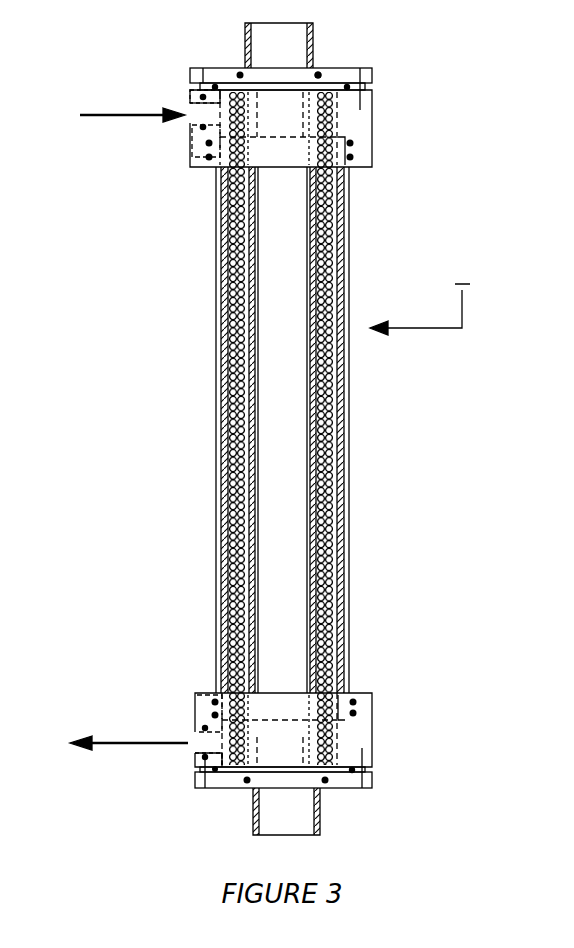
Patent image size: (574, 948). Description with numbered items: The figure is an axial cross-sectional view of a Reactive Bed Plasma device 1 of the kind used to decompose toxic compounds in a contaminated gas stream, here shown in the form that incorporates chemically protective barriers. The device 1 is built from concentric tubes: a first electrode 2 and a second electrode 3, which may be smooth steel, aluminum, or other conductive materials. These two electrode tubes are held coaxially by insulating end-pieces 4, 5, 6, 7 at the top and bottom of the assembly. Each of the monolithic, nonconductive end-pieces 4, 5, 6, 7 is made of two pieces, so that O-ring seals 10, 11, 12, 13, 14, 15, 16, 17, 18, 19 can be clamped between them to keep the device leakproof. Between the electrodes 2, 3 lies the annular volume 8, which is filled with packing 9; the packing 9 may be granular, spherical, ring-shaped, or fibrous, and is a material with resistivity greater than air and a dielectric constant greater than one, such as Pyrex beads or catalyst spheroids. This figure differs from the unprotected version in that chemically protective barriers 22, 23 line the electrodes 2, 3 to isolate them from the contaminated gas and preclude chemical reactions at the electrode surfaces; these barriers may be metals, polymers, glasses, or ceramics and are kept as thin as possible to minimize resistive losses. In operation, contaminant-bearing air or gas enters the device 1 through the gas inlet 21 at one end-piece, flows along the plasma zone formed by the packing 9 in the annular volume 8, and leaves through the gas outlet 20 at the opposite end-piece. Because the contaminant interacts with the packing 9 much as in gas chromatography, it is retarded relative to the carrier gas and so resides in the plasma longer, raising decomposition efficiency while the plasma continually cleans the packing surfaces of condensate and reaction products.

The plasma device 1 is at (420, 298).
The first electrode 2 is at (253, 366).
The second electrode 3 is at (216, 243).
The insulating end-piece 4 is at (195, 697).
The insulating end-piece 5 is at (190, 165).
The insulating end-piece 6 is at (232, 790).
The insulating end-piece 7 is at (222, 69).
The annular volume 8 is at (232, 434).
The packing 9 is at (235, 302).
The O-ring seal 10 is at (322, 790).
The O-ring seal 11 is at (320, 76).
The O-ring seal 12 is at (352, 772).
The O-ring seal 13 is at (350, 86).
The O-ring seal 14 is at (356, 713).
The O-ring seal 15 is at (354, 143).
The O-ring seal 16 is at (356, 702).
The O-ring seal 17 is at (354, 157).
The O-ring seal 18 is at (195, 757).
The O-ring seal 19 is at (190, 96).
The gas outlet 20 is at (112, 743).
The gas inlet 21 is at (116, 115).
The chemically protective barrier 22 is at (336, 542).
The chemically protective barrier 23 is at (340, 468).